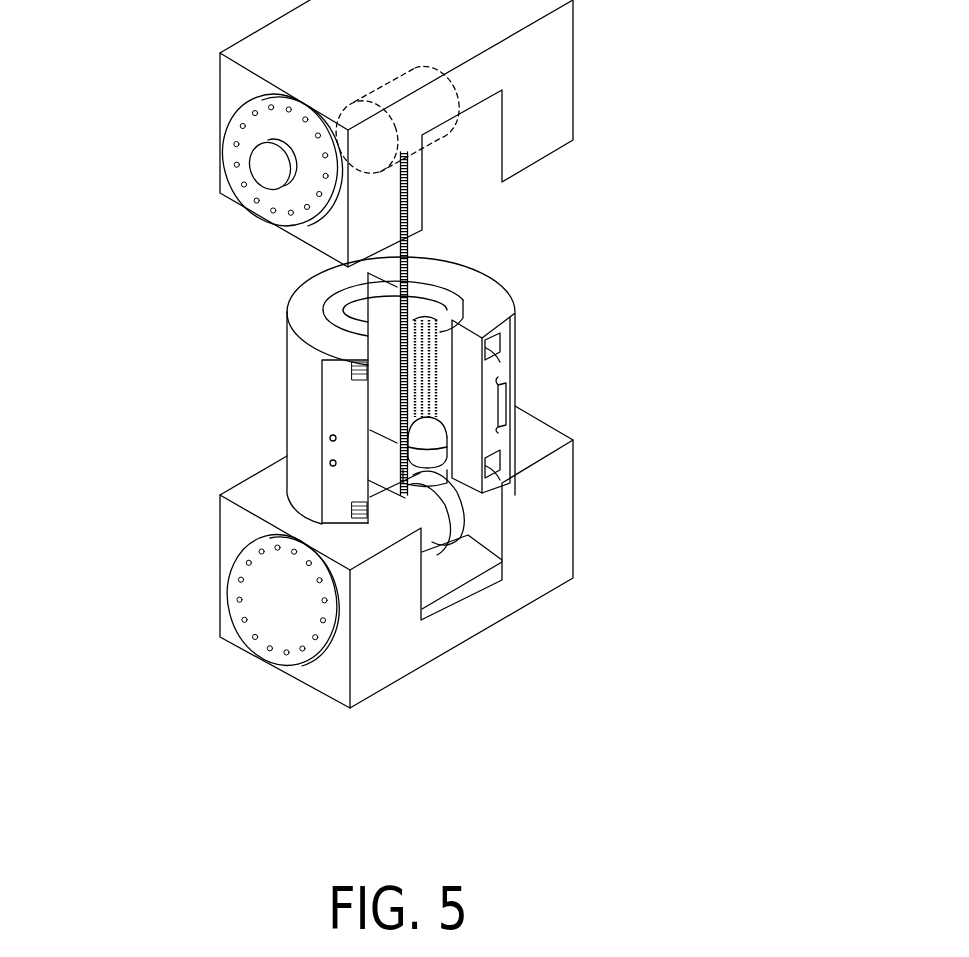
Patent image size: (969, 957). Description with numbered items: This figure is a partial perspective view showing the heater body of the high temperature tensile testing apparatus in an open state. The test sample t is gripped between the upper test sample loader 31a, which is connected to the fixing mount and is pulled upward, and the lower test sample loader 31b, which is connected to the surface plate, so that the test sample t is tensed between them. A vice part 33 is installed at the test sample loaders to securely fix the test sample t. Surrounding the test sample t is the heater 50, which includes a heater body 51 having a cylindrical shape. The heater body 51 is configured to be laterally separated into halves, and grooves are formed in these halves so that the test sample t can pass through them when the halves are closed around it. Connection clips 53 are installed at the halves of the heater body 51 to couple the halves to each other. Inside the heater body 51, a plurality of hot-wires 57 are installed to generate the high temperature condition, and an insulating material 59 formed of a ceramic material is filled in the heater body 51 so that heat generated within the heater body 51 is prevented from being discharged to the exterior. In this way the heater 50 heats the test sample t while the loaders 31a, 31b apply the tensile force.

The upper test sample loader 31a is at (557, 67).
The lower test sample loader 31b is at (531, 559).
The vice part 33 is at (430, 133).
The heater 50 is at (256, 383).
The heater body 51 is at (488, 303).
The connection clips 53 is at (493, 345).
The hot-wires 57 is at (412, 383).
The insulating material 59 is at (397, 486).
The test sample t is at (410, 483).